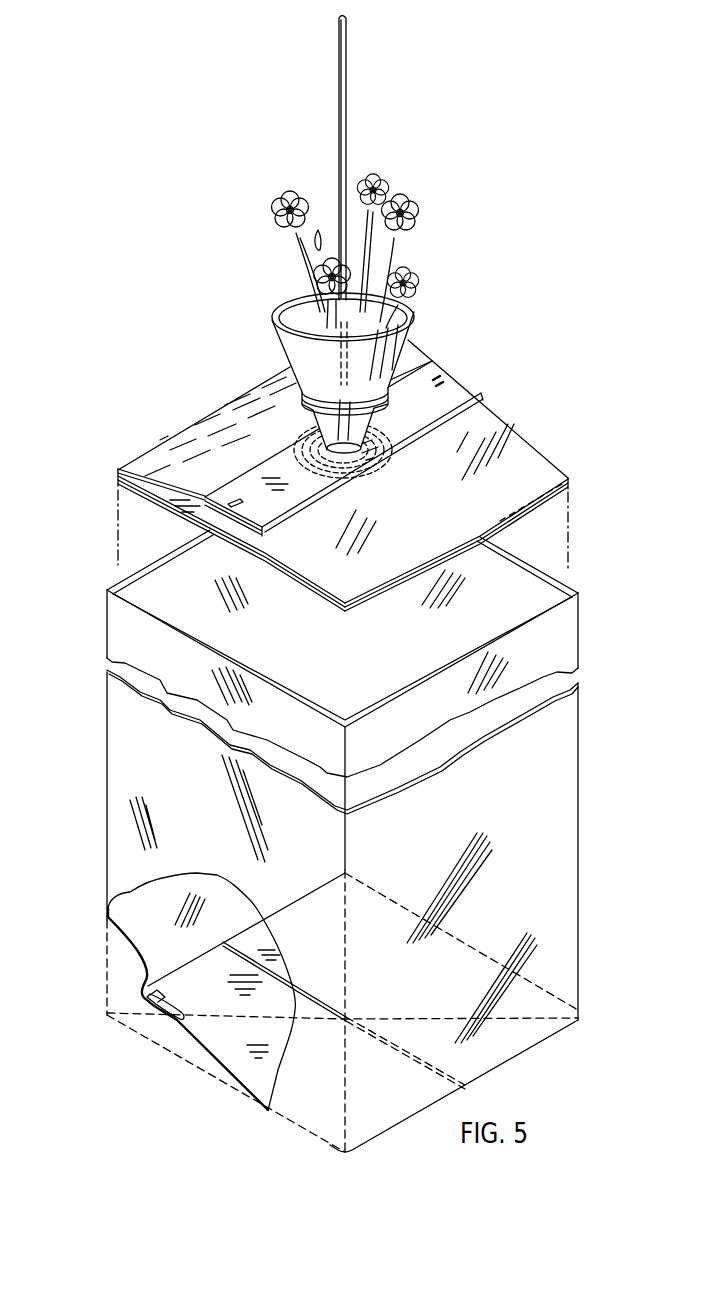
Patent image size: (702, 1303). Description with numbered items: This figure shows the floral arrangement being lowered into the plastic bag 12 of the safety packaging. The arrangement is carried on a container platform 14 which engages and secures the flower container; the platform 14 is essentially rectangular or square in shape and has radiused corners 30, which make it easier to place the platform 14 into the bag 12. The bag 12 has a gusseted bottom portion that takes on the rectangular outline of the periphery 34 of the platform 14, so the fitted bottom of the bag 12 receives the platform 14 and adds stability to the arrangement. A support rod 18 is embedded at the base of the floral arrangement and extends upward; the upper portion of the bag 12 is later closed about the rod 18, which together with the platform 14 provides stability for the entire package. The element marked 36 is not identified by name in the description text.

The plastic bag 12 is at (572, 872).
The container platform 14 is at (500, 430).
The support rod 18 is at (339, 92).
The radiused corners 30 is at (569, 478).
The periphery 34 is at (203, 1075).
The lid edge 36 is at (513, 517).